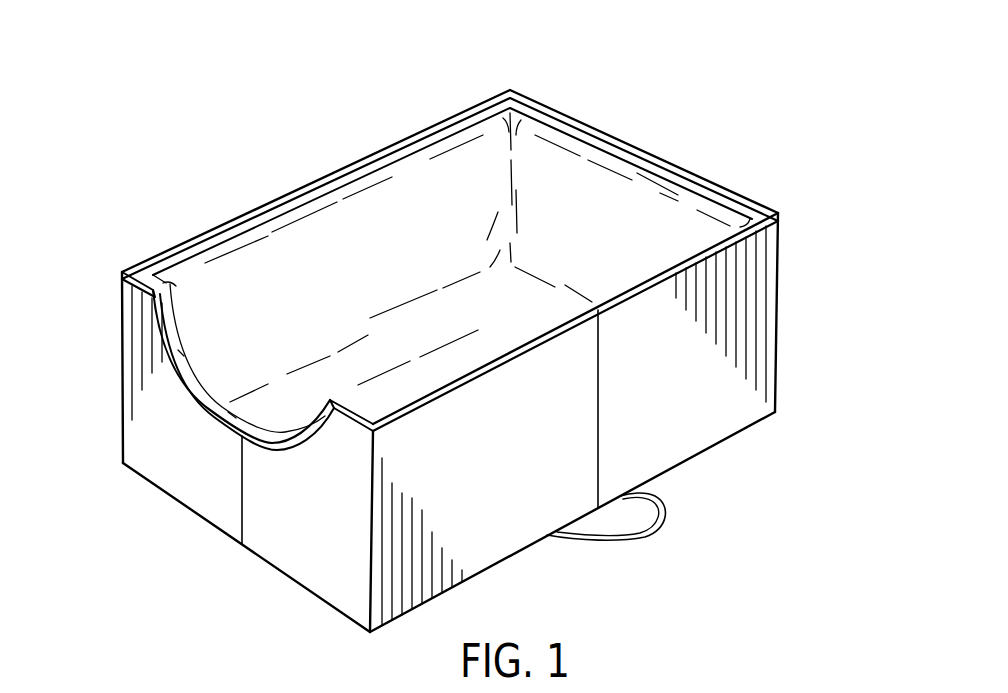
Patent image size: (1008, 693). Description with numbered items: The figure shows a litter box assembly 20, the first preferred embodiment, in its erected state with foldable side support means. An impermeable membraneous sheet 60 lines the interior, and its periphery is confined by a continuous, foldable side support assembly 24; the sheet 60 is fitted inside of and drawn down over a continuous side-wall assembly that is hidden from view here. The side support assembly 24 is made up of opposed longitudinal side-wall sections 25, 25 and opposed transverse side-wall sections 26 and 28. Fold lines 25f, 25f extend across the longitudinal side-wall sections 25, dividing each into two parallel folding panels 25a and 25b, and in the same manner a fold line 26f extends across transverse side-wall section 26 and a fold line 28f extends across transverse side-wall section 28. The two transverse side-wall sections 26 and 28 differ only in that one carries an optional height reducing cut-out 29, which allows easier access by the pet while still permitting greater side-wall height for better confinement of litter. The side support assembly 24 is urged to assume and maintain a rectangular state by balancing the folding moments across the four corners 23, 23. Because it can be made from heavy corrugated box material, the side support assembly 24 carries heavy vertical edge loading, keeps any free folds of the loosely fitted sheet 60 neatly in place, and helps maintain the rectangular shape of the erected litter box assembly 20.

The litter box assembly 20 is at (232, 152).
The corners 23 is at (122, 270).
The side support assembly 24 is at (702, 390).
The longitudinal side-wall sections 25 is at (367, 156).
The folding panel 25a is at (508, 558).
The folding panel 25b is at (718, 445).
The fold lines 25f is at (338, 178).
The transverse side-wall section 26 is at (572, 118).
The fold line 26f is at (640, 157).
The transverse side-wall section 28 is at (288, 578).
The fold line 28f is at (242, 480).
The height reducing cut-out 29 is at (210, 420).
The impermeable membraneous sheet 60 is at (235, 234).